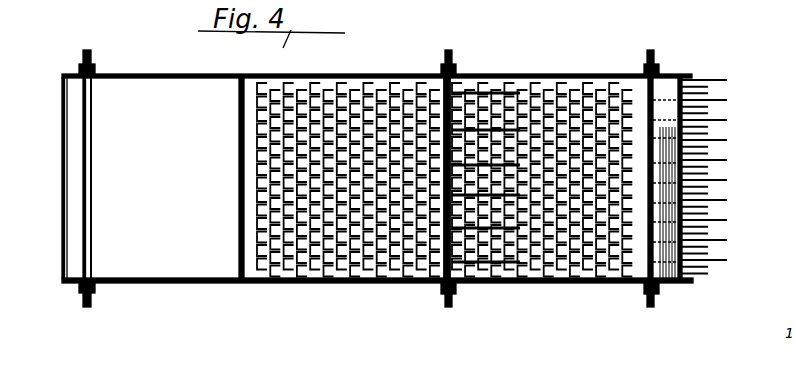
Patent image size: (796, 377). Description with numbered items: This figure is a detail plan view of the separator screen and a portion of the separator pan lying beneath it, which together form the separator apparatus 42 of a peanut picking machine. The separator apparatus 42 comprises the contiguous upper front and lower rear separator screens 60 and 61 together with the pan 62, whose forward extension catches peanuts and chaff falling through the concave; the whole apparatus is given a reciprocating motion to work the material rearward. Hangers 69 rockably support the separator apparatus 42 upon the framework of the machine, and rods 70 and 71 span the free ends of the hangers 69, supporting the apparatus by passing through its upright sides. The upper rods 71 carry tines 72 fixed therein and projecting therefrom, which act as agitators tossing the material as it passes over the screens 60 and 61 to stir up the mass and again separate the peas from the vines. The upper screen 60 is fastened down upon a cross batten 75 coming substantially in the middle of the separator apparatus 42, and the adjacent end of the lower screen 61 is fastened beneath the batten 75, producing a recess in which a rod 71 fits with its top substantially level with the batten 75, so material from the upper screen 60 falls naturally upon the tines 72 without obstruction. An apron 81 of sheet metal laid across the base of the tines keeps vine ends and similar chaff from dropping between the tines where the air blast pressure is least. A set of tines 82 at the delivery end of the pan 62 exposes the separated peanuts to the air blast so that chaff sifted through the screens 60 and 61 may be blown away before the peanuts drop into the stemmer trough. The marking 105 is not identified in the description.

The frame 105 is at (98, 18).
The rods 70 is at (80, 56).
The pan 62 is at (142, 100).
The separator apparatus 42 is at (239, 76).
The upper front separator screen 60 is at (300, 88).
The upper pair of rods 71 is at (443, 55).
The tines 72 is at (496, 92).
The lower rear separator screen 61 is at (545, 102).
The hangers 69 is at (720, 189).
The apron 81 is at (670, 92).
The cross batten 75 is at (727, 99).
The set of tines 82 is at (710, 128).